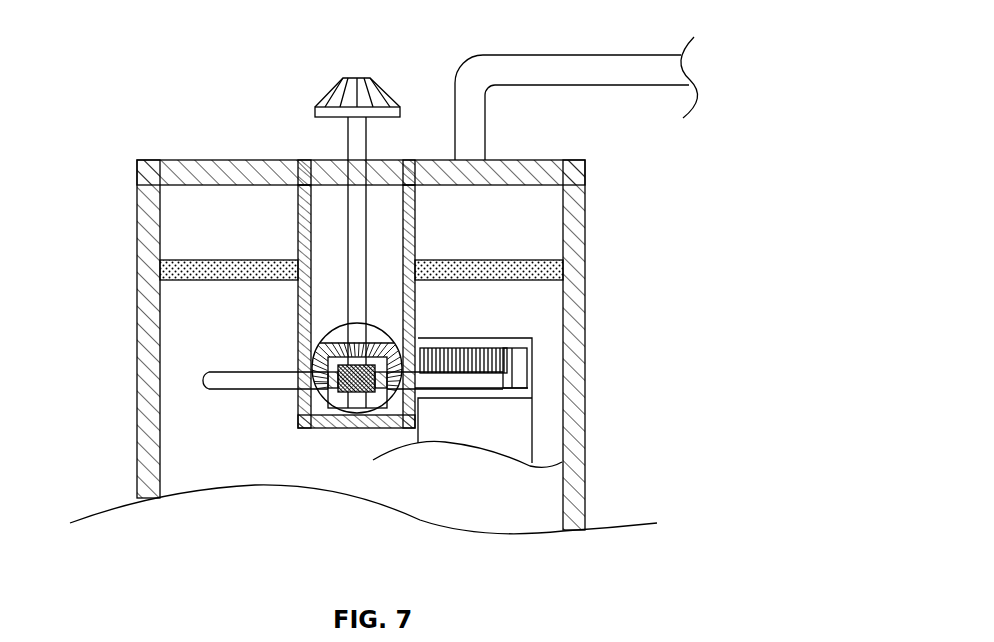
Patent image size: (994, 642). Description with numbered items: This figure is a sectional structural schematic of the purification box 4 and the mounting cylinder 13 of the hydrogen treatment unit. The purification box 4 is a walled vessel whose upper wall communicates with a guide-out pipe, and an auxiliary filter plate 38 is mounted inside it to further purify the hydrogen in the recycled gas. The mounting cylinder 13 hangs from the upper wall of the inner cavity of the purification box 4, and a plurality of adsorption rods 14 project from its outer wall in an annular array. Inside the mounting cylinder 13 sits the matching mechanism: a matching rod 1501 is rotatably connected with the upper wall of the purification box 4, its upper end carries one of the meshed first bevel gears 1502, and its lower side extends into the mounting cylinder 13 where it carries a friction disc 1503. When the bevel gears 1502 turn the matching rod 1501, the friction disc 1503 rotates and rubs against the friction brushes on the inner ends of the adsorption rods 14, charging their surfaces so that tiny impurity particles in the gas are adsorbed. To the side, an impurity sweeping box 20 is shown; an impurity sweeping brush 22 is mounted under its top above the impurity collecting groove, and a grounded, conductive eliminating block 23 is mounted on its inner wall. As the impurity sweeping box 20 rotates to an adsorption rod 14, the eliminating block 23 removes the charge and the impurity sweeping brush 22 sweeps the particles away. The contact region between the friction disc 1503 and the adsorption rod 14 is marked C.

The purification box 4 is at (138, 442).
The mounting cylinder 13 is at (297, 222).
The adsorption rod 14 is at (257, 383).
The impurity sweeping box 20 is at (505, 428).
The impurity sweeping brush 22 is at (490, 362).
The eliminating block 23 is at (518, 363).
The auxiliary filter plate 38 is at (528, 258).
The matching rod 1501 is at (355, 148).
The first bevel gear 1502 is at (365, 100).
The friction disc 1503 is at (352, 395).
The engagement point C is at (377, 408).